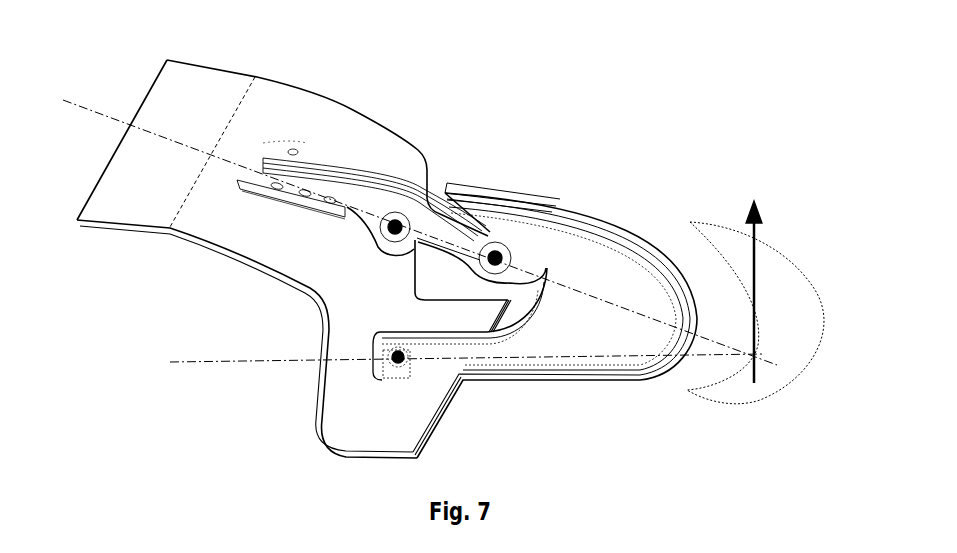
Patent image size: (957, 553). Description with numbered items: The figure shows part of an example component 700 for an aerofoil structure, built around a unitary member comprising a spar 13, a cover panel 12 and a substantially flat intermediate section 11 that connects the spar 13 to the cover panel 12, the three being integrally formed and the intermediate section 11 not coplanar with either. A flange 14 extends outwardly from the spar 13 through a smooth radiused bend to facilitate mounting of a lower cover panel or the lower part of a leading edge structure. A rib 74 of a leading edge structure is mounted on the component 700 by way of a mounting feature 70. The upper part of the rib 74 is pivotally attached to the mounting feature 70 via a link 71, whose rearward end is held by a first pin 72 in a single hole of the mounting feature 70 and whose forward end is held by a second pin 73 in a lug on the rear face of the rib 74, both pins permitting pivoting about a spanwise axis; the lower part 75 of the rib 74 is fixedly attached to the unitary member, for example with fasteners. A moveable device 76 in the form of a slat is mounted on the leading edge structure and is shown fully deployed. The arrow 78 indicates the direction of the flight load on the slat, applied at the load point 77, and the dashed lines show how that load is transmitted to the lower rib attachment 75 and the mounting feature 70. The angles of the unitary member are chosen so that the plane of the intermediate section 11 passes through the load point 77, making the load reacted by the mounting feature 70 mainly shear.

The component 700 is at (570, 88).
The intermediate section 11 is at (268, 236).
The cover panel 12 is at (174, 113).
The spar 13 is at (369, 313).
The flange 14 is at (394, 411).
The mounting feature 70 is at (344, 192).
The link 71 is at (443, 240).
The first pin 72 is at (396, 220).
The second pin 73 is at (495, 250).
The rib 74 is at (567, 240).
The lower part of the rib 75 is at (410, 363).
The moveable device 76 is at (788, 297).
The load point 77 is at (757, 357).
The arrow 78 is at (755, 235).